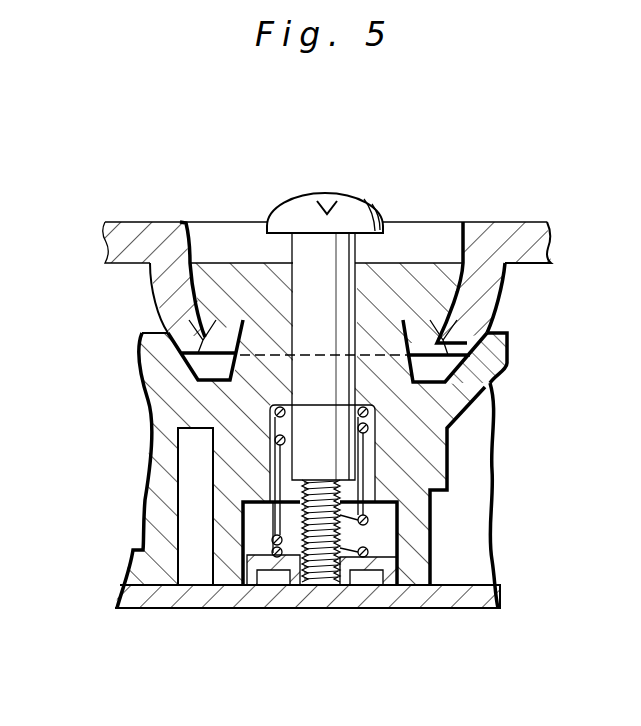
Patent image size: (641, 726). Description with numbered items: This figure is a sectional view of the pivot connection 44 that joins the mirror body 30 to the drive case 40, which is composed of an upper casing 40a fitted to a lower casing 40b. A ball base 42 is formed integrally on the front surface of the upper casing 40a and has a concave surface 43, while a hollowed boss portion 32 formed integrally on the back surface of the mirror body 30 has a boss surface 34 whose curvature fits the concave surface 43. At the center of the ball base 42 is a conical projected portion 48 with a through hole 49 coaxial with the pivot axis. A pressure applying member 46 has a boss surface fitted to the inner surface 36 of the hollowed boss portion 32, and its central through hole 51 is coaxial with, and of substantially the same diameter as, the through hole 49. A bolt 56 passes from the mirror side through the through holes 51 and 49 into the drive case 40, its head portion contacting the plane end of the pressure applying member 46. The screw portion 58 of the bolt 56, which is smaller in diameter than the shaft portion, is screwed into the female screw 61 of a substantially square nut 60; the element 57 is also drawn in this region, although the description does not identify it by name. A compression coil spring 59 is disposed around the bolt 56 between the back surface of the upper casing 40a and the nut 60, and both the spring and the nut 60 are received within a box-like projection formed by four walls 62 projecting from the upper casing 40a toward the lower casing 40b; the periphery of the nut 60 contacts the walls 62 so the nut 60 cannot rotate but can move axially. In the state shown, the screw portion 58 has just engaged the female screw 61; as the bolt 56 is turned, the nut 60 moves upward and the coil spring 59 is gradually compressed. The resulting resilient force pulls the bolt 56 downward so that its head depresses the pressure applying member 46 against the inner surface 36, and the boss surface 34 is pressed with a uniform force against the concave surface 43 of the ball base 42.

The mirror body 30 is at (525, 233).
The hollowed boss portion 32 is at (497, 302).
The boss surface 34 is at (152, 302).
The inner surface 36 is at (205, 300).
The drive case 40 is at (498, 486).
The upper casing 40a is at (508, 353).
The lower casing 40b is at (488, 600).
The ball base 42 is at (488, 372).
The concave surface 43 is at (484, 390).
The pivot connection 44 is at (131, 354).
The pressure applying member 46 is at (240, 285).
The projected portion 48 is at (418, 320).
The through hole 49 is at (288, 372).
The through hole 51 is at (358, 285).
The bolt 56 is at (352, 213).
The spring retainer 57 is at (277, 428).
The screw portion 58 is at (395, 485).
The compression coil spring 59 is at (282, 440).
The nut 60 is at (253, 557).
The female screw 61 is at (343, 583).
The walls 62 is at (222, 558).